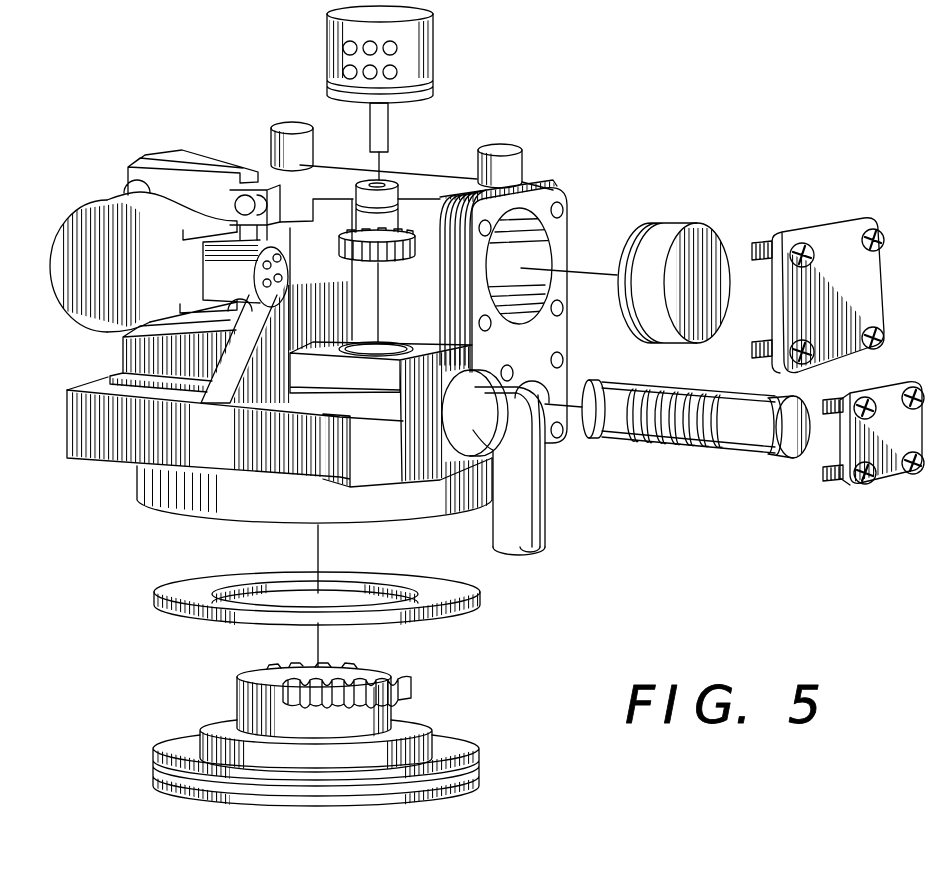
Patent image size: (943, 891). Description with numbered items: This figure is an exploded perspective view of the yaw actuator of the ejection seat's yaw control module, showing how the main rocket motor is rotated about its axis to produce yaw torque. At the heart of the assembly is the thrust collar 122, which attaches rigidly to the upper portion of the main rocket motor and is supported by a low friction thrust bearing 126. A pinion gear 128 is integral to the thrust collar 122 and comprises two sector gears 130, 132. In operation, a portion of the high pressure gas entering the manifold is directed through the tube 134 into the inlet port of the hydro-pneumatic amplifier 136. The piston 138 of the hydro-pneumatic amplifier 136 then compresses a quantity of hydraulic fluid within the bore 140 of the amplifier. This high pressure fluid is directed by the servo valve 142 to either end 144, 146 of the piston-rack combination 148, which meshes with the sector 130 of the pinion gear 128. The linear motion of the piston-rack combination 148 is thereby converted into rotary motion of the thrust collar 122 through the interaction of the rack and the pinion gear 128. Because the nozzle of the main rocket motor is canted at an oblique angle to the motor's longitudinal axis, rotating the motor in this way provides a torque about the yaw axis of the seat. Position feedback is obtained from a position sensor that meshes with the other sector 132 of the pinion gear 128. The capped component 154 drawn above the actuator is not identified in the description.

The thrust collar 122 is at (480, 773).
The low friction thrust bearing 126 is at (473, 590).
The pinion gear 128 is at (360, 670).
The sector gear 130 is at (272, 660).
The sector gear 132 is at (407, 693).
The tube 134 is at (540, 527).
The hydro-pneumatic amplifier 136 is at (566, 236).
The piston 138 is at (708, 243).
The bore 140 is at (538, 208).
The servo valve 142 is at (83, 230).
The end of piston-rack combination 144 is at (798, 455).
The end of piston-rack combination 146 is at (580, 443).
The piston-rack combination 148 is at (688, 448).
The cap with holes 154 is at (425, 40).